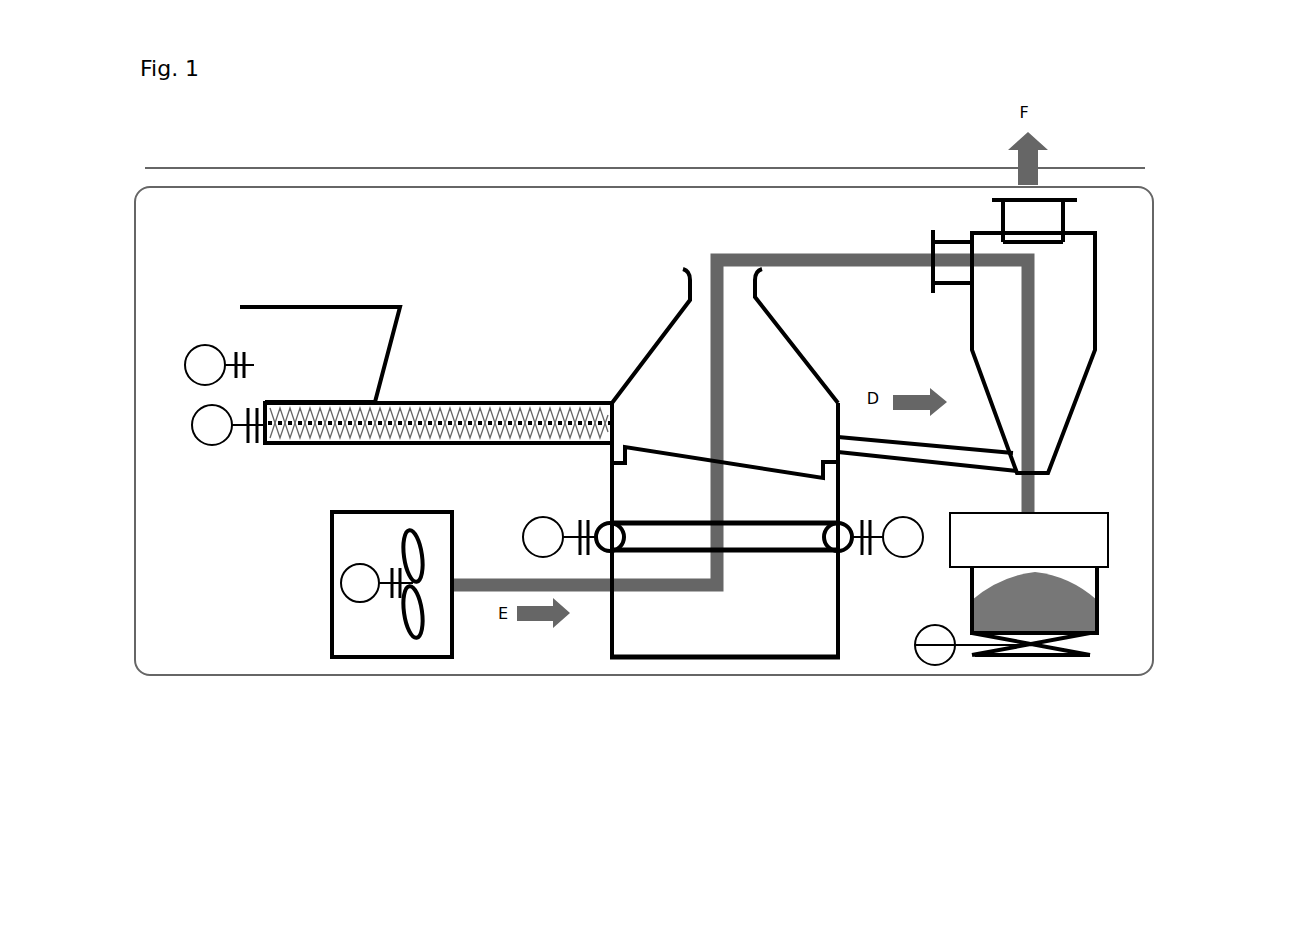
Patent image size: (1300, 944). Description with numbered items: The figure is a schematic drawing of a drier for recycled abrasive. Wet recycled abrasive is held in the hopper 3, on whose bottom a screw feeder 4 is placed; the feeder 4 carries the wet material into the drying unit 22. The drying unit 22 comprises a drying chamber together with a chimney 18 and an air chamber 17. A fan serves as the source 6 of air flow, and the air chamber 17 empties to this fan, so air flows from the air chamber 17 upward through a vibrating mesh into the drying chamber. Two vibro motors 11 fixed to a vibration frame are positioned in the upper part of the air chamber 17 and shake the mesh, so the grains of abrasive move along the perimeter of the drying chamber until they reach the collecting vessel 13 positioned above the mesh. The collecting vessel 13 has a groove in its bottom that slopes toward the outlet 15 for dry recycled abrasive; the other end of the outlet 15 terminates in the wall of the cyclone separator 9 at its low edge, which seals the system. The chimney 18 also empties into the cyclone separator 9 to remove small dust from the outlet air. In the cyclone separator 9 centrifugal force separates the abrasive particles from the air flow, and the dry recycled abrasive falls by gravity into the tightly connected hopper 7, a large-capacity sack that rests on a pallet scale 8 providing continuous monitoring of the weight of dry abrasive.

The hopper for wet recycled abrasive 3 is at (372, 303).
The screw feeder 4 is at (528, 398).
The source of air flow 6 is at (431, 676).
The hopper for dry recycled abrasive 7 is at (1101, 620).
The scale 8 is at (1031, 676).
The cyclone separator 9 is at (1099, 317).
The vibro motor 11 is at (783, 553).
The collecting vessel 13 is at (782, 385).
The output of dry recycled abrasive from the drying chamber 15 is at (861, 441).
The air chamber 17 is at (682, 603).
The chimney 18 is at (731, 252).
The drying unit 22 is at (728, 660).